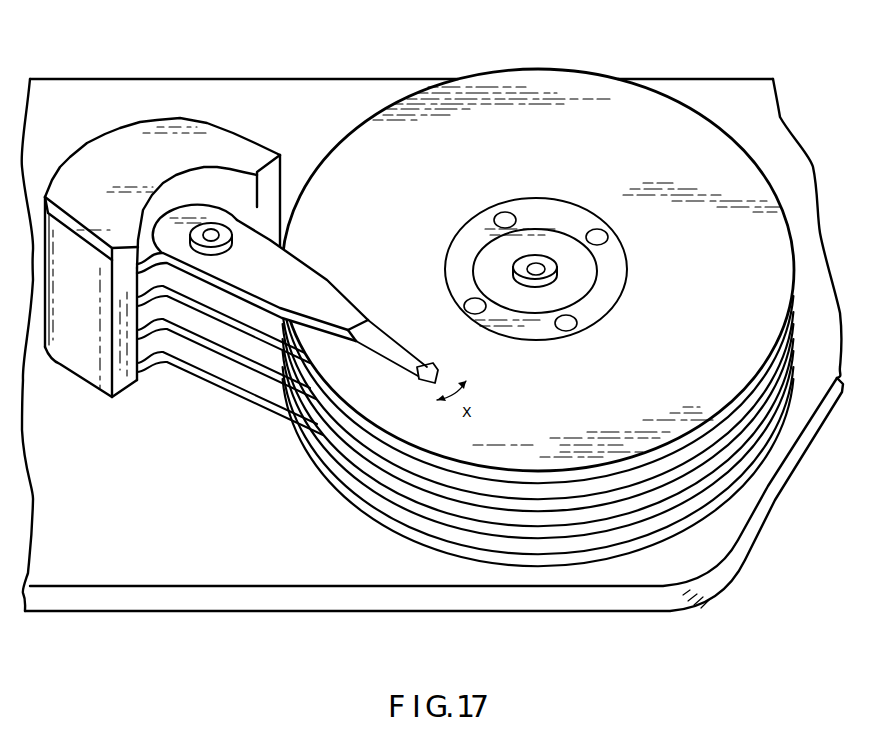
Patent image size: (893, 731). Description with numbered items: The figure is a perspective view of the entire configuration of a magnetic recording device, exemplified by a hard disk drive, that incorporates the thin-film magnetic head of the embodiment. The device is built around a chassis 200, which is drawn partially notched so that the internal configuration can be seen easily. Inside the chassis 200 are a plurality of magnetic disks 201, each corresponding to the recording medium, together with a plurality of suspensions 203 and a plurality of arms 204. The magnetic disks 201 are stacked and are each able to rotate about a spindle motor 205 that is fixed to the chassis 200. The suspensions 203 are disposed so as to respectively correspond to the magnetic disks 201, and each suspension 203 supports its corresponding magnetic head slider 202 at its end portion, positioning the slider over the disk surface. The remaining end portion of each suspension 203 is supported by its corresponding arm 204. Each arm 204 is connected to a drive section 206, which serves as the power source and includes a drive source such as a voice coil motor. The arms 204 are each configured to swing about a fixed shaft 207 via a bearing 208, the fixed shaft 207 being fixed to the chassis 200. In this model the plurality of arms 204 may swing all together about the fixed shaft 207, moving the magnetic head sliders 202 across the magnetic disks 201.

The chassis 200 is at (720, 97).
The magnetic disk 201 is at (732, 240).
The magnetic head slider 202 is at (536, 178).
The suspension 203 is at (418, 200).
The arm 204 is at (266, 179).
The spindle motor 205 is at (508, 460).
The drive section 206 is at (118, 122).
The fixed shaft 207 is at (212, 232).
The bearing 208 is at (193, 230).